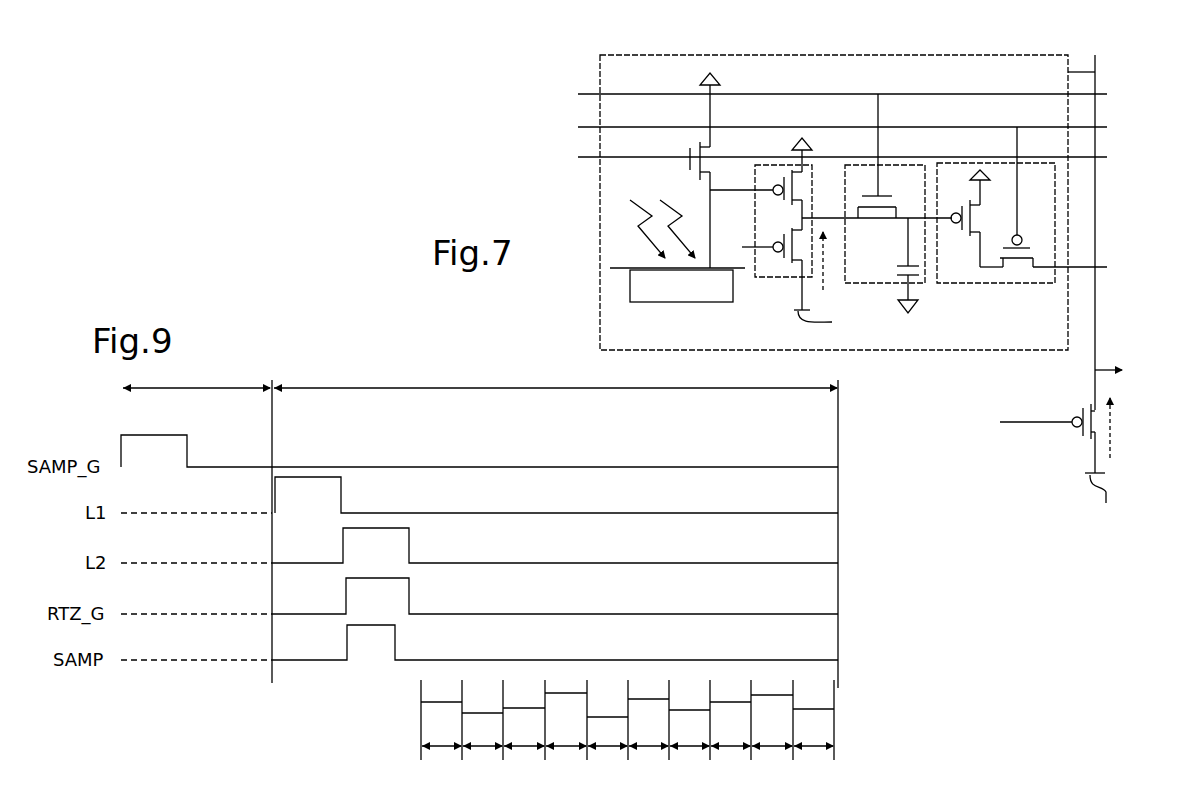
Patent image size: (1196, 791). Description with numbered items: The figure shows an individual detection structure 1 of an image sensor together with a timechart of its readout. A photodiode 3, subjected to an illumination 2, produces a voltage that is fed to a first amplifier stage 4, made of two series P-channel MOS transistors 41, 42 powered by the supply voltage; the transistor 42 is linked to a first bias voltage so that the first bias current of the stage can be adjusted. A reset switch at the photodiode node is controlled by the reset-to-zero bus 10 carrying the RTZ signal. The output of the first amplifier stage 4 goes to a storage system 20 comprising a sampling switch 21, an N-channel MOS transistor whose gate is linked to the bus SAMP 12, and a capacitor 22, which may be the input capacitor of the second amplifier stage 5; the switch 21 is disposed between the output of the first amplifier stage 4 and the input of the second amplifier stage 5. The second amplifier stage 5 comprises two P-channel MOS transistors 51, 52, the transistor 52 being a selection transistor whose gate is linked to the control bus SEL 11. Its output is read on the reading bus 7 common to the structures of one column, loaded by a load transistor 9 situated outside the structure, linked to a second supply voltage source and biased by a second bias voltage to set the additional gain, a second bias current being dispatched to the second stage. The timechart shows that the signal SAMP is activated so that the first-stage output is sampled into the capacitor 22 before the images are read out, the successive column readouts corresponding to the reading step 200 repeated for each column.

In FIG. 7, the individual detection structure 1 is at (1095, 72).
In FIG. 7, the illumination 2 is at (632, 206).
In FIG. 7, the photodiode 3 is at (630, 288).
In FIG. 7, the first amplifier stage 4 is at (770, 157).
In FIG. 7, the second amplifier stage 5 is at (1055, 177).
In FIG. 7, the reading bus 7 is at (1097, 222).
In FIG. 7, the load transistor 9 is at (1068, 436).
In FIG. 7, the reset-to-zero bus 10 is at (578, 157).
In FIG. 7, the control bus SEL 11 is at (578, 127).
In FIG. 7, the bus SAMP 12 is at (578, 94).
In FIG. 7, the storage system 20 is at (920, 165).
In FIG. 7, the sampling switch 21 is at (895, 172).
In FIG. 7, the capacitor 22 is at (918, 292).
In FIG. 7, the P-channel MOS transistor 41 is at (812, 178).
In FIG. 7, the P-channel MOS transistor 42 is at (783, 278).
In FIG. 7, the first field-effect transistor 51 is at (993, 222).
In FIG. 7, the second field-effect transistor 52 is at (1017, 280).
In FIG. 9, the reading step 200 is at (530, 743).